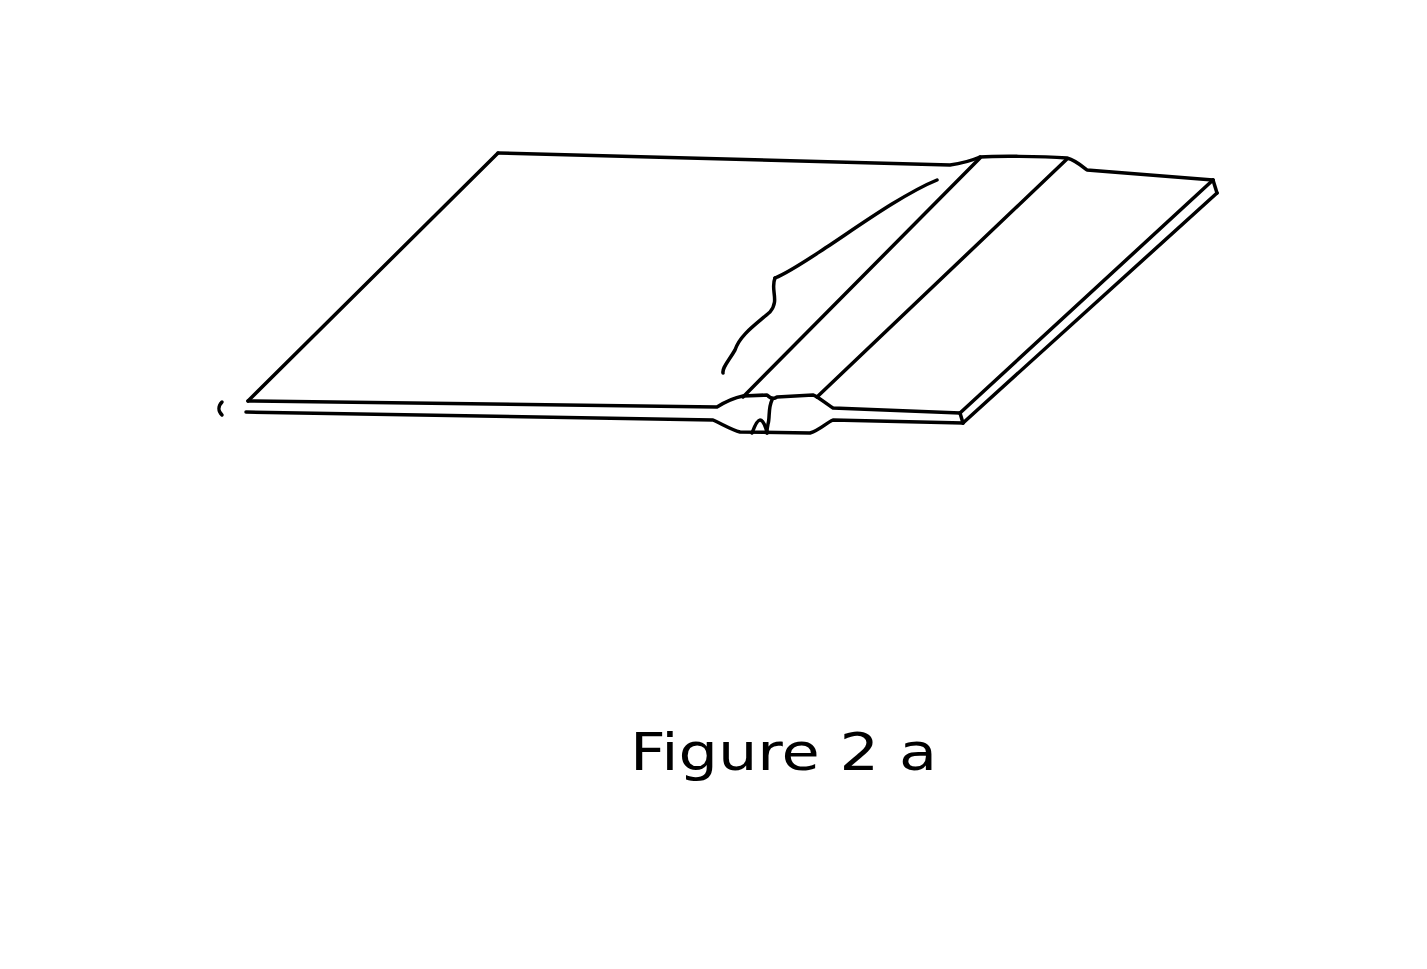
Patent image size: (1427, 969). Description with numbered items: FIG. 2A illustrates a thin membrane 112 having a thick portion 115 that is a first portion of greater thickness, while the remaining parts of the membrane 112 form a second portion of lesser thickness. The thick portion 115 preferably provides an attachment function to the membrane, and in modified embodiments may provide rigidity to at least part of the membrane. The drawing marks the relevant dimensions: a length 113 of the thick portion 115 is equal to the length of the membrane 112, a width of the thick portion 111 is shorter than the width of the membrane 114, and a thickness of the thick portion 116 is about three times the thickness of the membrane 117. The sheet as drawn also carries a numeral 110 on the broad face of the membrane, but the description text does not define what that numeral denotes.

The base plate 110 is at (541, 286).
The width of the thick portion 111 is at (995, 138).
The membrane 112 is at (983, 437).
The length of the thick portion 113 is at (775, 278).
The width of the membrane 114 is at (930, 463).
The thick portion 115 is at (955, 249).
The thickness of the thick portion 116 is at (745, 433).
The thickness of the membrane 117 is at (207, 407).